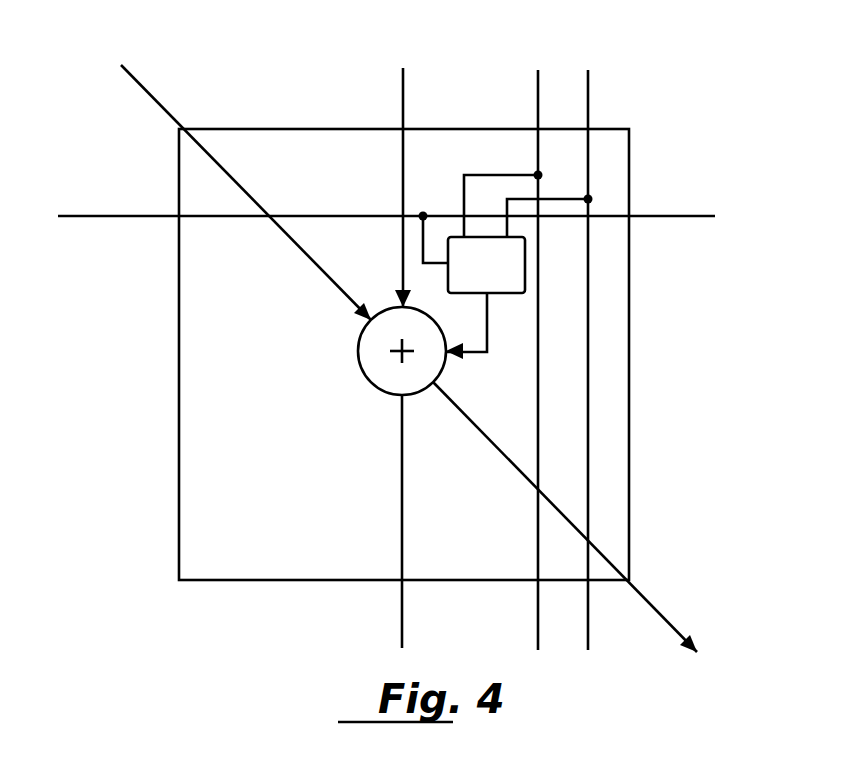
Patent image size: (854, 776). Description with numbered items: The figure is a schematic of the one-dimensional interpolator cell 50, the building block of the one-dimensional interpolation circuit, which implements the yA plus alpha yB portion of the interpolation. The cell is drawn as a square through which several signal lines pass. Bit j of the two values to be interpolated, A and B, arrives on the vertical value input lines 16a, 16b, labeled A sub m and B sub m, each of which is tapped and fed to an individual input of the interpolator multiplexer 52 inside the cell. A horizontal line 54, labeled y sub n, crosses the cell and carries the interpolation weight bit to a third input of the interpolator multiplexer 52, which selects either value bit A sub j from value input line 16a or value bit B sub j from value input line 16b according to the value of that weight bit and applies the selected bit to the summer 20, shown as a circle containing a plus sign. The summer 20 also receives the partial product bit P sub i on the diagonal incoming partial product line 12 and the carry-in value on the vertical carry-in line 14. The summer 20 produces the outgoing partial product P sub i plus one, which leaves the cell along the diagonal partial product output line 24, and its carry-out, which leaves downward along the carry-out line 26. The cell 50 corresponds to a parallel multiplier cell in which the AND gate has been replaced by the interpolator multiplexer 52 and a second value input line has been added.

The incoming partial product line 12 is at (150, 90).
The carry-in line 14 is at (400, 82).
The value input line 16a is at (538, 100).
The value input line 16b is at (588, 100).
The summer 20 is at (370, 360).
The partial product output line 24 is at (655, 603).
The carry-out line 26 is at (400, 617).
The one-dimensional interpolator cell 50 is at (772, 146).
The interpolator multiplexer 52 is at (510, 291).
The horizontal line y_n 54 is at (140, 218).